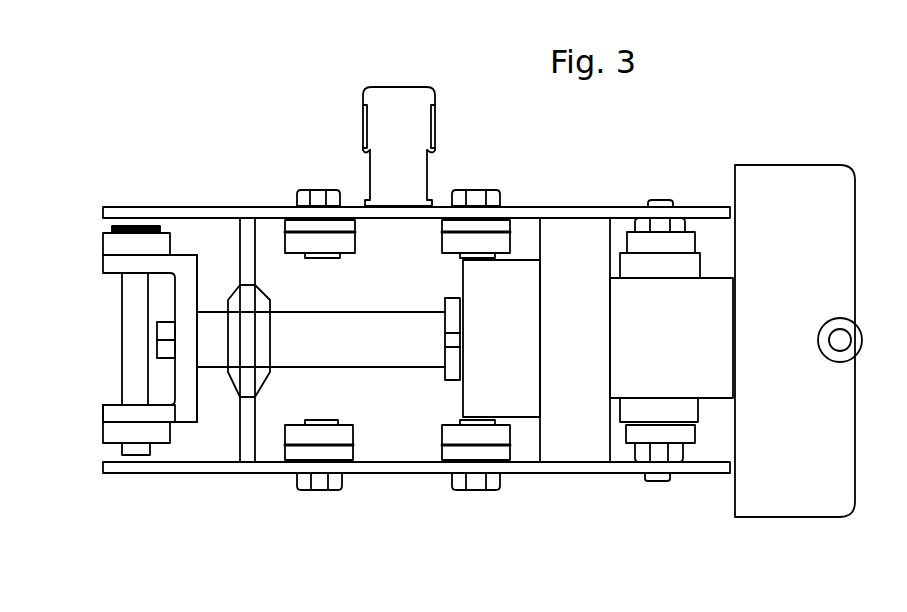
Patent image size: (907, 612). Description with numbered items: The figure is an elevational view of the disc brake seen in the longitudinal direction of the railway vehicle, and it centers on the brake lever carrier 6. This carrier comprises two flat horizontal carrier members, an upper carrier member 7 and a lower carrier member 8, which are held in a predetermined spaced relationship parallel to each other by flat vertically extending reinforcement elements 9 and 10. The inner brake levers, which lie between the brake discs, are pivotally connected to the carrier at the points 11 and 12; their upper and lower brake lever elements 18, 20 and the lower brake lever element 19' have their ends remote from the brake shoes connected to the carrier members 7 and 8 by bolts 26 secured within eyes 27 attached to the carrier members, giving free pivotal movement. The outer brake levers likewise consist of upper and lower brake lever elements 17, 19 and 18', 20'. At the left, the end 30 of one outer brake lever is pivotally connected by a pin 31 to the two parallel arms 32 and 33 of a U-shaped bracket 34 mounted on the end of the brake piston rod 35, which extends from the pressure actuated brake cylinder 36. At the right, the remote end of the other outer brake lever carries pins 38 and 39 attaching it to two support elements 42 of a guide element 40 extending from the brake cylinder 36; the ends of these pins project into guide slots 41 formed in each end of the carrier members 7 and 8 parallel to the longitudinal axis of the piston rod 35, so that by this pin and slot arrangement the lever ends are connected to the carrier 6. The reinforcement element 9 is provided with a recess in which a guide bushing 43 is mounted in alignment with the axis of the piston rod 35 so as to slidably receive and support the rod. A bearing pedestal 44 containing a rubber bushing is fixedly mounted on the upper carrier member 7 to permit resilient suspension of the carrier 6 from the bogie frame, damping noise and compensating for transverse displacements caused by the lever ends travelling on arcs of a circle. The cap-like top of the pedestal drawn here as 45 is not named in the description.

The brake lever carrier 6 is at (508, 195).
The upper carrier member 7 is at (178, 212).
The lower carrier member 8 is at (229, 470).
The reinforcement element 9 is at (253, 232).
The reinforcement element 10 is at (587, 450).
The pivotal connection 11 is at (352, 486).
The pivotal connection 12 is at (507, 480).
The upper brake lever element 17 is at (110, 245).
The upper brake lever element 18 is at (327, 261).
The upper brake lever element 18' is at (670, 196).
The lower brake lever element 19 is at (135, 467).
The lower brake lever element 19' is at (472, 360).
The lower brake lever element 20 is at (319, 417).
The lower brake lever element 20' is at (691, 488).
The bolt 26 is at (312, 196).
The eye 27 is at (348, 225).
The end of brake lever 30 is at (96, 362).
The pin 31 is at (128, 322).
The arm 32 is at (110, 413).
The arm 33 is at (108, 266).
The U-shaped bracket 34 is at (190, 410).
The brake piston rod 35 is at (215, 318).
The brake cylinder 36 is at (760, 180).
The pin 38 is at (661, 482).
The pin 39 is at (658, 200).
The guide element 40 is at (718, 372).
The guide slot 41 is at (689, 482).
The support element 42 is at (678, 277).
The guide bushing 43 is at (263, 383).
The bearing pedestal 44 is at (428, 186).
The cap 45 is at (437, 108).